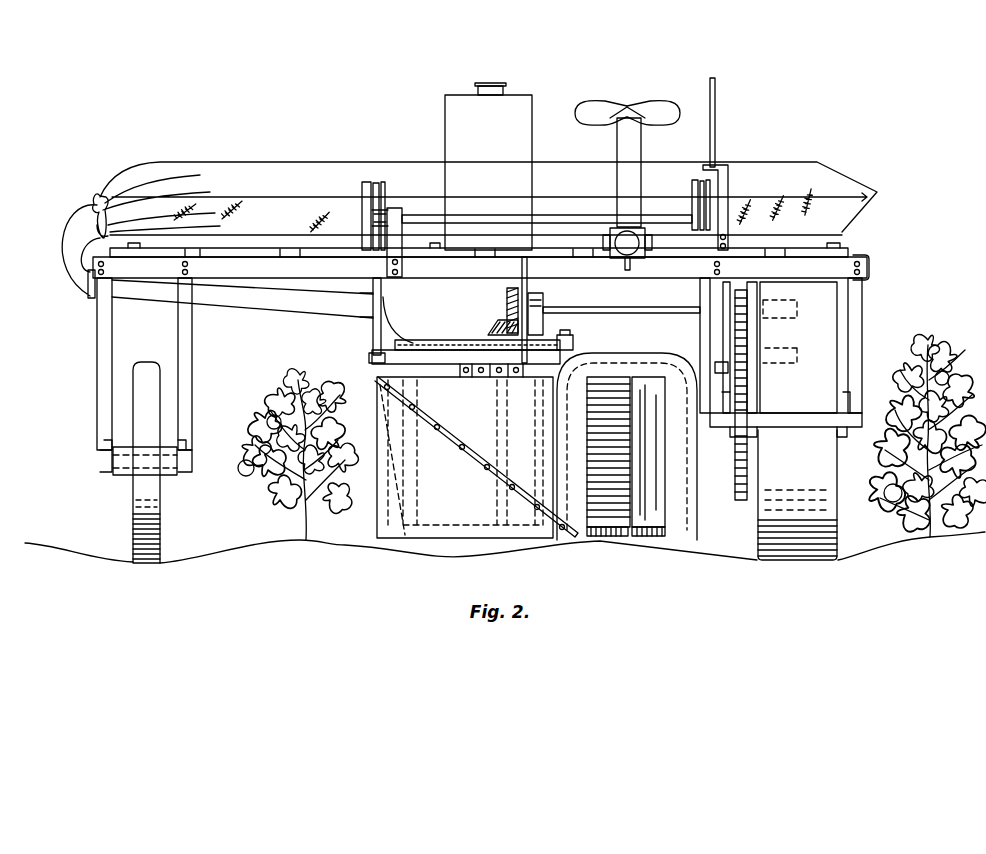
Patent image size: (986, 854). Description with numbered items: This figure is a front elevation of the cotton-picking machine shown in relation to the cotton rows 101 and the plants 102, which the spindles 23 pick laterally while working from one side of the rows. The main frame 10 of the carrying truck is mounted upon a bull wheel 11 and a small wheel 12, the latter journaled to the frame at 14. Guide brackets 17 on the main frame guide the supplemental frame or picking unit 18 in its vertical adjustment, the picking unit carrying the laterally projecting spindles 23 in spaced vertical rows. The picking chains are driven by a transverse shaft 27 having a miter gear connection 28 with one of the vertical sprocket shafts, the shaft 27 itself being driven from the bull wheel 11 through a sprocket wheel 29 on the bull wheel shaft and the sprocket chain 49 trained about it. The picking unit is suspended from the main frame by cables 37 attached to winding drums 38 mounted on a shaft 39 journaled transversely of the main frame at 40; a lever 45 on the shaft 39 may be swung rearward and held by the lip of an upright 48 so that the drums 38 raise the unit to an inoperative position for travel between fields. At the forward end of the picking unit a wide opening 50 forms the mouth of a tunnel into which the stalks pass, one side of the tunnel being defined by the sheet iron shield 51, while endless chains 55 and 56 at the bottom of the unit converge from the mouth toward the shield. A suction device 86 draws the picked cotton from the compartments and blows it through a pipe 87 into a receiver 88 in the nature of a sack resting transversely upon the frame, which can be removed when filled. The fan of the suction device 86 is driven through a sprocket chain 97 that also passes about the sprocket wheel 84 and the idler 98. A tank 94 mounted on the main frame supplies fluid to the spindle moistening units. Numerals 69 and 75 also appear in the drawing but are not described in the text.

The main frame 10 is at (260, 270).
The bull wheel 11 is at (827, 302).
The small wheel 12 is at (146, 364).
The journal 14 is at (192, 460).
The guide brackets 17 is at (730, 368).
The supplemental frame 18 is at (858, 333).
The spindles 23 is at (588, 481).
The shaft 27 is at (580, 311).
The miter gear connection 28 is at (507, 302).
The sprocket wheel 29 is at (746, 447).
The cables 37 is at (396, 300).
The winding drums 38 is at (382, 190).
The shaft 39 is at (474, 216).
The journal 40 is at (399, 211).
The lever 45 is at (716, 128).
The upright 48 is at (731, 168).
The sprocket chain 49 is at (765, 296).
The opening 50 is at (588, 455).
The sheet iron shield 51 is at (668, 498).
The endless chain 55 is at (606, 538).
The endless chain 56 is at (630, 538).
The housing 69 is at (688, 476).
The handle 75 is at (630, 262).
The sprocket wheel 84 is at (420, 346).
The suction device 86 is at (476, 457).
The pipe 87 is at (262, 305).
The receiver 88 is at (364, 165).
The tank 94 is at (488, 166).
The sprocket chain 97 is at (456, 345).
The idler 98 is at (580, 345).
The cotton rows 101 is at (306, 545).
The plants 102 is at (312, 518).